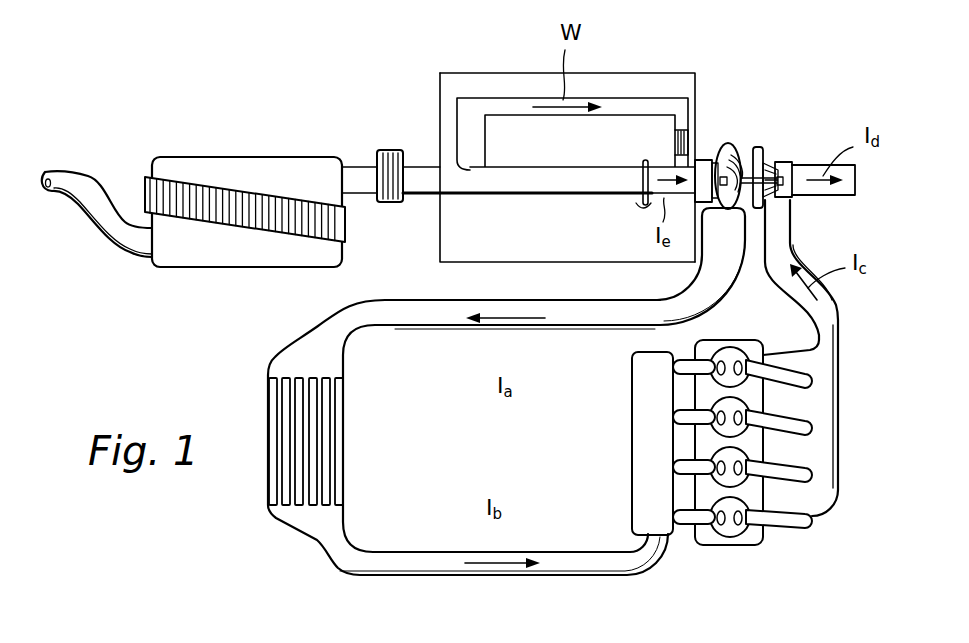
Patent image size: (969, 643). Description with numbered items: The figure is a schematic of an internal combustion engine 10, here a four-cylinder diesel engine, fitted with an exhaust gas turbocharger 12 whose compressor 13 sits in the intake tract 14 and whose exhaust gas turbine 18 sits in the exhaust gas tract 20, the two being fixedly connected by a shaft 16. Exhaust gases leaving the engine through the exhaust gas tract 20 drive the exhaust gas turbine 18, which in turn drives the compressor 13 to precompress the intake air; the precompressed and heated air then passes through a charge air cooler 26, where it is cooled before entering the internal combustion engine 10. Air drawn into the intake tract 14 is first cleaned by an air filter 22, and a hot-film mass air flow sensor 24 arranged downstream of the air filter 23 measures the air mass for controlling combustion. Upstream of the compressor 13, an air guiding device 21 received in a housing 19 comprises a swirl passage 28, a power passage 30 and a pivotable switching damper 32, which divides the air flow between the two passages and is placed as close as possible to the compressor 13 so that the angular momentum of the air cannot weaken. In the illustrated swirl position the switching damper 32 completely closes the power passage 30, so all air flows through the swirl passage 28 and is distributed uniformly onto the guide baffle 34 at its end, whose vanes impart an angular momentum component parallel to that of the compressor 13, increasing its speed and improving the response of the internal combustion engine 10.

The internal combustion engine 10 is at (735, 548).
The exhaust gas turbocharger 12 is at (770, 126).
The compressor 13 is at (735, 150).
The intake tract 14 is at (76, 182).
The shaft 16 is at (765, 205).
The exhaust gas turbine 18 is at (791, 162).
The housing 19 is at (433, 230).
The exhaust gas tract 20 is at (790, 250).
The air guiding device 21 is at (716, 46).
The air filter 22 is at (207, 148).
The air filter 23 is at (357, 173).
The mass air flow sensor 24 is at (390, 150).
The charge air cooler 26 is at (256, 464).
The swirl passage 28 is at (518, 105).
The power passage 30 is at (522, 182).
The switching damper 32 is at (645, 190).
The guide baffle 34 is at (690, 140).